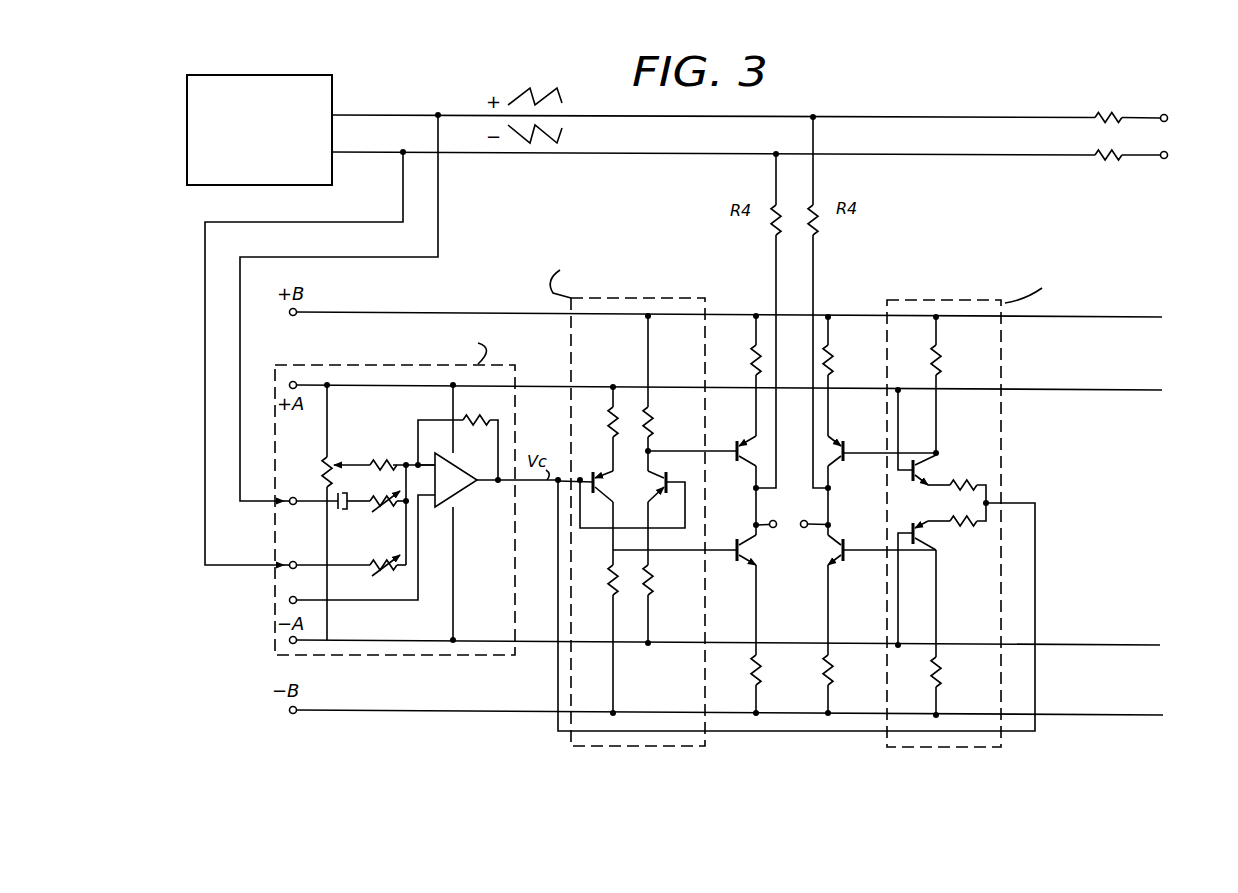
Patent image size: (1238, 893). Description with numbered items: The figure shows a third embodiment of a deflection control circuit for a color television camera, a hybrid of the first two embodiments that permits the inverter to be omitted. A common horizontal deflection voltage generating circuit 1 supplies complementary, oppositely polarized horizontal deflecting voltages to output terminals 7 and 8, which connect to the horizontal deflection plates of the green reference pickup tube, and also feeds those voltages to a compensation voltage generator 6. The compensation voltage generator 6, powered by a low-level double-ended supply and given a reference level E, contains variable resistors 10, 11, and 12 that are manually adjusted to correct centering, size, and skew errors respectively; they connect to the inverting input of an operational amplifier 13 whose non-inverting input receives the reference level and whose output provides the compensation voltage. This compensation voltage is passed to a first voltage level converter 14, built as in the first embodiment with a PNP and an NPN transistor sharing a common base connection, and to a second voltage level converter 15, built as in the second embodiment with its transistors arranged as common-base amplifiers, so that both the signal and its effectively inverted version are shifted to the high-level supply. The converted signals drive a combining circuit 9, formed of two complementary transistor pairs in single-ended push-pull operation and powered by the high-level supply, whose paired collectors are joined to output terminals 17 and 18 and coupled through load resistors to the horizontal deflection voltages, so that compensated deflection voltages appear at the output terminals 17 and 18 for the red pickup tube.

The deflection voltage generator 1 is at (334, 88).
The compensation voltage generator 6 is at (515, 370).
The output terminal 7 is at (1166, 113).
The output terminal 8 is at (1162, 160).
The combining circuit 9 is at (798, 608).
The variable resistor 10 is at (325, 463).
The variable resistor 11 is at (372, 515).
The variable resistor 12 is at (388, 570).
The operational amplifier 13 is at (468, 497).
The first voltage level converter 14 is at (566, 325).
The second voltage level converter 15 is at (1003, 331).
The output terminal 17 is at (788, 517).
The output terminal 18 is at (806, 530).